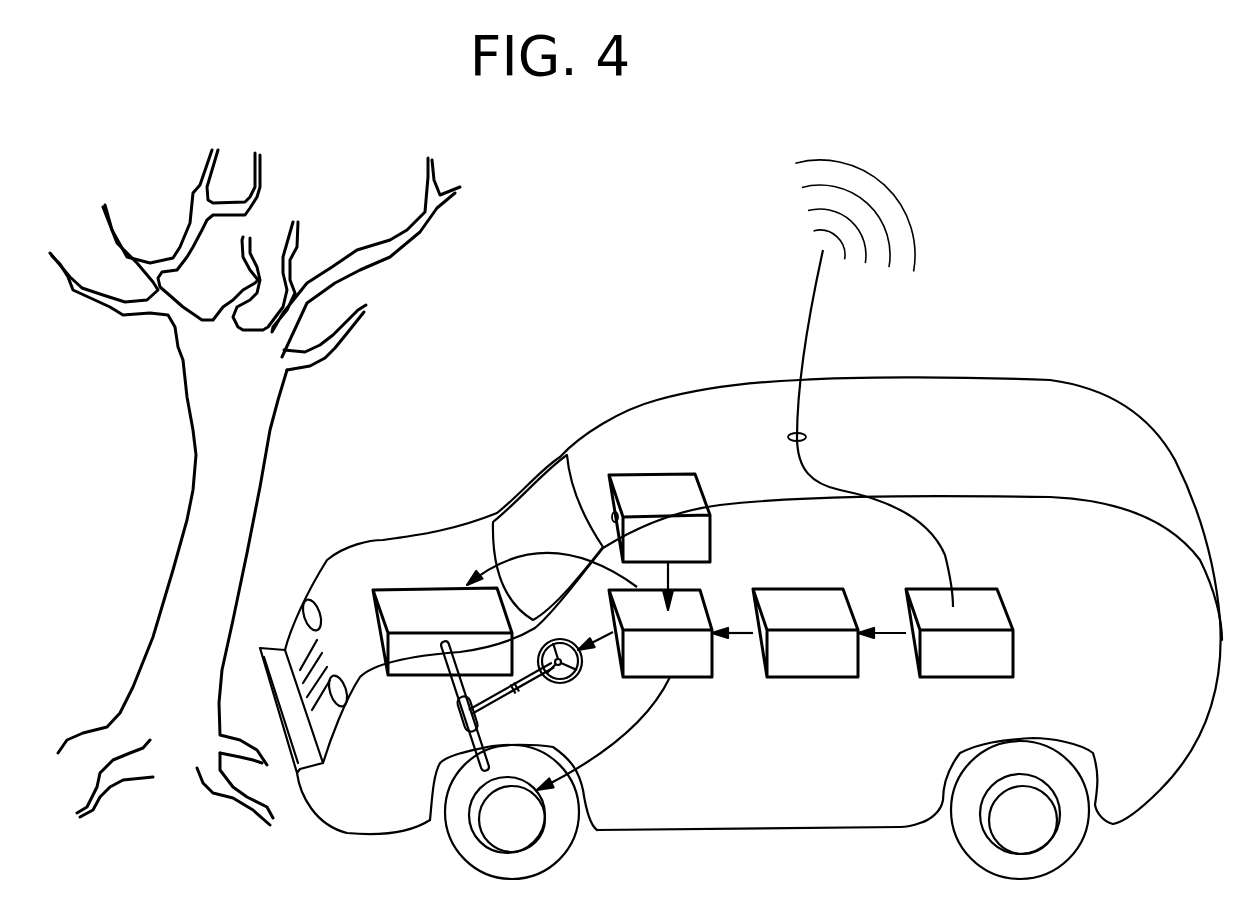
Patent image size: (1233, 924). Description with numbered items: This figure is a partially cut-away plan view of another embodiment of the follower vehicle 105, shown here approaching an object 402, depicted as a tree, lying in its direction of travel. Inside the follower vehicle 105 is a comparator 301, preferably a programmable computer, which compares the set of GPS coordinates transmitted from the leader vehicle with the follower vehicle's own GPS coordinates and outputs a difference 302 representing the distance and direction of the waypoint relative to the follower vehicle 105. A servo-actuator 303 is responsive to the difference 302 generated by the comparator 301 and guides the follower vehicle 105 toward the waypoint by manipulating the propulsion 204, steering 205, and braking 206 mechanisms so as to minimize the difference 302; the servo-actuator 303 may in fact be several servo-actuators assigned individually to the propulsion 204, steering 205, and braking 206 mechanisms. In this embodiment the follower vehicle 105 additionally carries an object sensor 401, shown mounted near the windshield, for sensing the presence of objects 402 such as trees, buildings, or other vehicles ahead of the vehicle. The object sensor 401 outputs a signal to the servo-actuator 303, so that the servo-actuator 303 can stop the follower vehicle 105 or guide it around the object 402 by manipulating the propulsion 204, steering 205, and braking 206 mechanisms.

The follower vehicle 105 is at (419, 468).
The propulsion mechanism 204 is at (449, 605).
The steering mechanism 205 is at (575, 680).
The braking mechanism 206 is at (527, 837).
The comparator 301 is at (807, 657).
The difference 302 is at (745, 633).
The servo-actuator 303 is at (697, 663).
The object sensor 401 is at (647, 490).
The object 402 is at (225, 382).